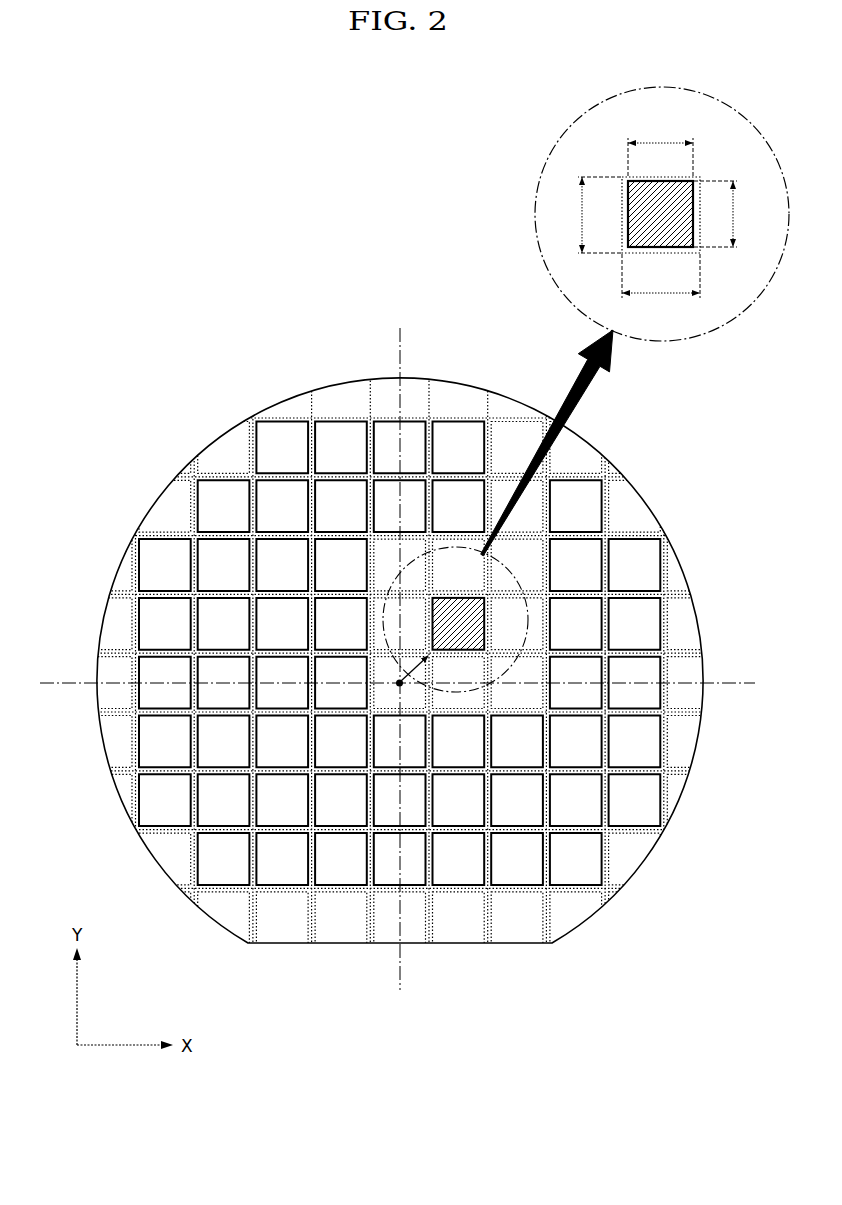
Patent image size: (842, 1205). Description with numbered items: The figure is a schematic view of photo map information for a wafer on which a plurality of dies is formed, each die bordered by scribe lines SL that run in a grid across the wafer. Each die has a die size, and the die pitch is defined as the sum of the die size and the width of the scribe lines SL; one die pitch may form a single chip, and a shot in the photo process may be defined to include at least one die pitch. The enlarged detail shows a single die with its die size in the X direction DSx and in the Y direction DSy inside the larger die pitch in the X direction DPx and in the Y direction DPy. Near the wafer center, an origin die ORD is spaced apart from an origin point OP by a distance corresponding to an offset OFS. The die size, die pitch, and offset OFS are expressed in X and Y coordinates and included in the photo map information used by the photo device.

The scribe lines SL is at (194, 450).
The origin die ORD is at (458, 600).
The origin point OP is at (412, 693).
The offset OFS is at (430, 670).
The die size in X direction DSx is at (660, 147).
The die size in Y direction DSy is at (735, 214).
The die pitch in X direction DPx is at (661, 287).
The die pitch in Y direction DPy is at (582, 215).